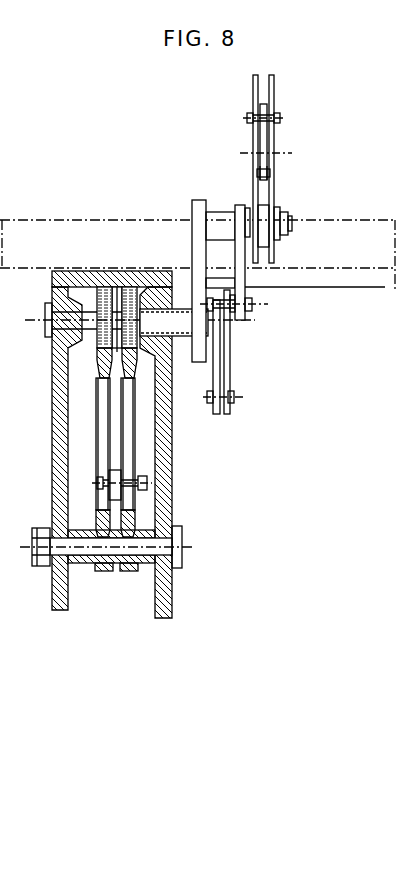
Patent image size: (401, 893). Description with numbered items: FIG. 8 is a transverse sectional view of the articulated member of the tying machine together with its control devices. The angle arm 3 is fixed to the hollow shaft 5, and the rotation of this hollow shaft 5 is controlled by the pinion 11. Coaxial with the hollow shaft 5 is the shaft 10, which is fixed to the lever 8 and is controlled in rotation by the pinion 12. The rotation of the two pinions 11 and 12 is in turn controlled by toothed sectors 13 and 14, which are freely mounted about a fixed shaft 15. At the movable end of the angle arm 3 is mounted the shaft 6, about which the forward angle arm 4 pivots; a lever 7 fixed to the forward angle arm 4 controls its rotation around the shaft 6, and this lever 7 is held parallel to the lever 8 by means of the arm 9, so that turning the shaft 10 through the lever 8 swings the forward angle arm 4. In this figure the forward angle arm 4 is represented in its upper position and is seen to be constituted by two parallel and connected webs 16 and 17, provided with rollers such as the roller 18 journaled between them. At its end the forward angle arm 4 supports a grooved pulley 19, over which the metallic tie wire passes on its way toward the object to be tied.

The angle arm 3 is at (192, 255).
The forward angle arm 4 is at (273, 80).
The hollow shaft 5 is at (177, 337).
The shaft 6 is at (287, 222).
The lever 7 is at (248, 291).
The lever 8 is at (213, 378).
The arm 9 is at (230, 380).
The shaft 10 is at (58, 323).
The pinion 11 is at (129, 287).
The pinion 12 is at (104, 287).
The toothed sector 13 is at (130, 407).
The toothed sector 14 is at (100, 407).
The fixed shaft 15 is at (145, 557).
The web 16 is at (268, 107).
The web 17 is at (253, 97).
The roller 18 is at (270, 118).
The grooved pulley 19 is at (262, 173).